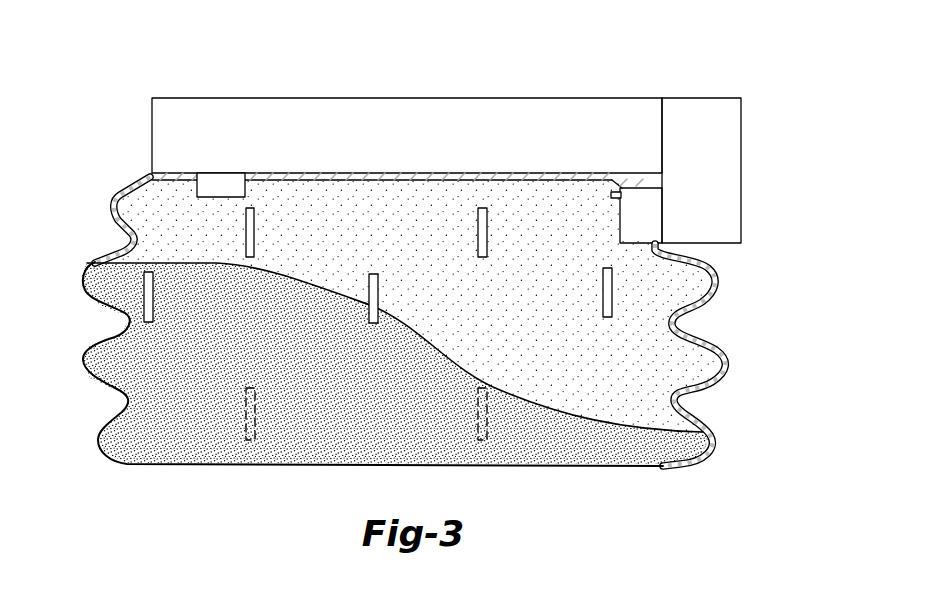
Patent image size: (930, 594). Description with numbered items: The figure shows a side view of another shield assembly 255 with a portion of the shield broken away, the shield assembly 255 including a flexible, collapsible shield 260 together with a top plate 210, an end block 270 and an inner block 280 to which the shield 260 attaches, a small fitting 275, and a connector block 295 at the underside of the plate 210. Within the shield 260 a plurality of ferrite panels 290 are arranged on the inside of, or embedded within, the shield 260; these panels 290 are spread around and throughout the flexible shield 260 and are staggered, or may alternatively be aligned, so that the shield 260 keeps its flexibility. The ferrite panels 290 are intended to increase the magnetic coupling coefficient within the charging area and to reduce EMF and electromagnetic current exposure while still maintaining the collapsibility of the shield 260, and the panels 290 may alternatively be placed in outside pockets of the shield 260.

The top plate 210 is at (417, 122).
The shield assembly 255 is at (715, 50).
The shield 260 is at (120, 200).
The end block 270 is at (718, 141).
The fitting 275 is at (613, 195).
The inner block 280 is at (645, 208).
The ferrite panels 290 is at (487, 233).
The connector block 295 is at (220, 181).